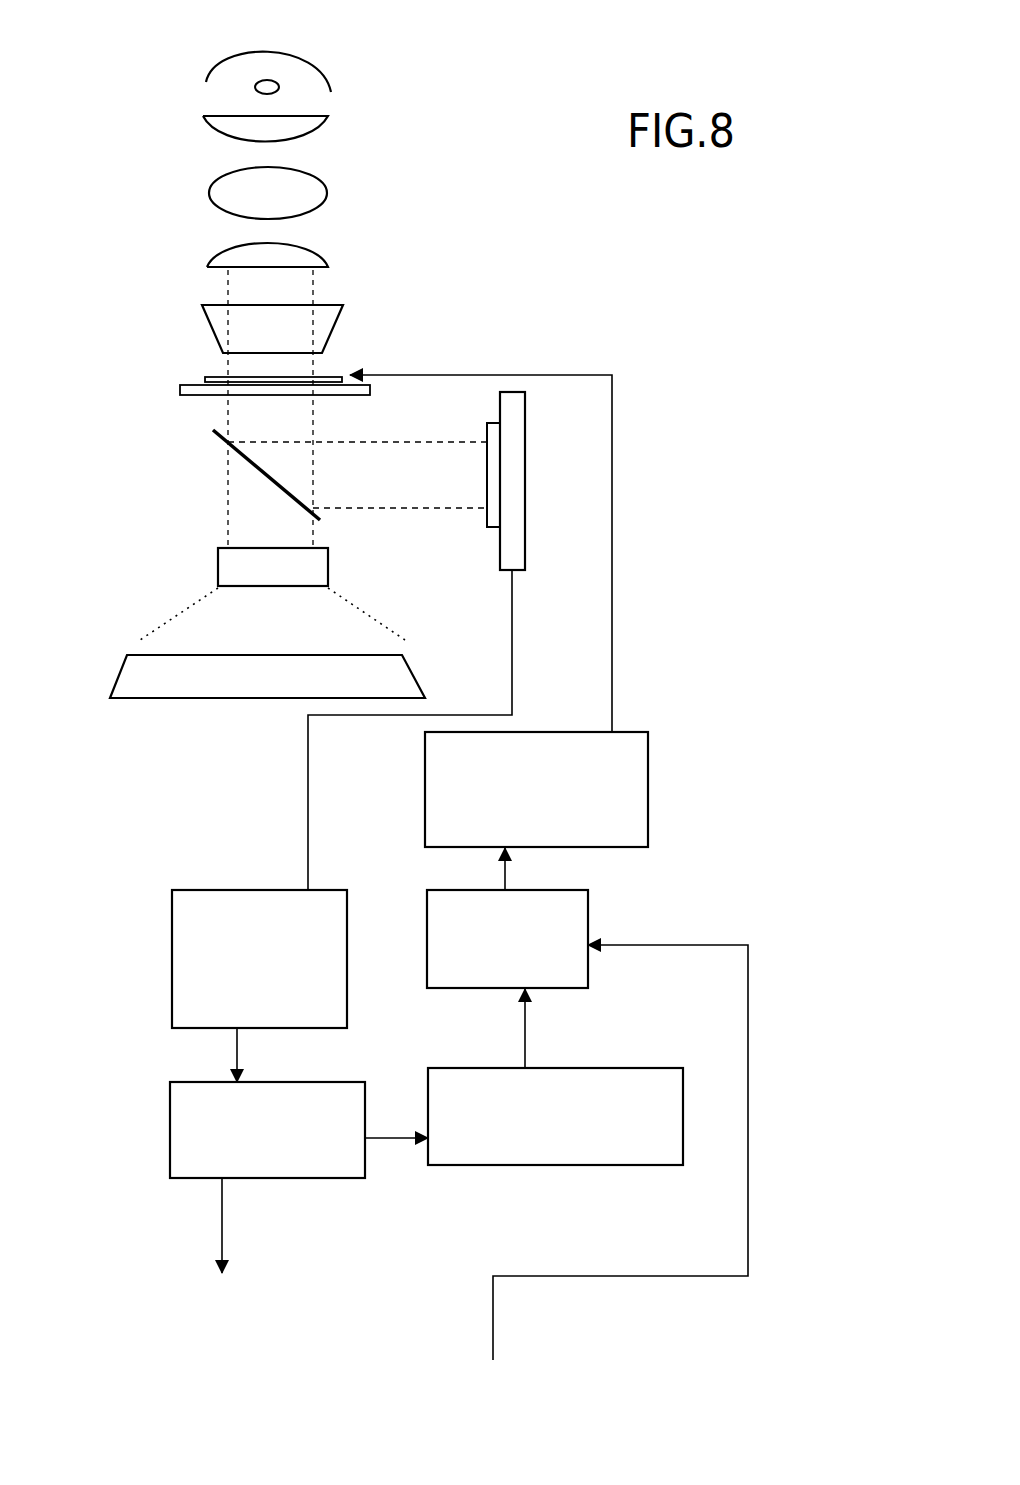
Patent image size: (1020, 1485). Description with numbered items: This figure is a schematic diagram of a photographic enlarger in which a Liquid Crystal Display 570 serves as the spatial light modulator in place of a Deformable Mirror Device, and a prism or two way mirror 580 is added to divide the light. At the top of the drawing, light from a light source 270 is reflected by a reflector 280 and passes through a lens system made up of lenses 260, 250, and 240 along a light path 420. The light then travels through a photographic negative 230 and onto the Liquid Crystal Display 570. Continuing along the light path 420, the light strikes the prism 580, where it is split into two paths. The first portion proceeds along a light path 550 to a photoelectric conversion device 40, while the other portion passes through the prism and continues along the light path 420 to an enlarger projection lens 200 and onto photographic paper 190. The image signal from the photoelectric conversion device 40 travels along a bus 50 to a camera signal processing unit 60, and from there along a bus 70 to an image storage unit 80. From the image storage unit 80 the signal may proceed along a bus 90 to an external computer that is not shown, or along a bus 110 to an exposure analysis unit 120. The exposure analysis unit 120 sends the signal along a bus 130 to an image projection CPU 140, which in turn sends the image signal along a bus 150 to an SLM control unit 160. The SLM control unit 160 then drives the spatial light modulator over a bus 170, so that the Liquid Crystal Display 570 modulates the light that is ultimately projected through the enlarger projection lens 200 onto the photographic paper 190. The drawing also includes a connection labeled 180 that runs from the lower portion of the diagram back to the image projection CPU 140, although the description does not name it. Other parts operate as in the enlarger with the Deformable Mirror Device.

The photoelectric conversion device 40 is at (525, 428).
The bus 50 is at (308, 745).
The camera signal processing unit 60 is at (255, 890).
The bus 70 is at (237, 1053).
The image storage unit 80 is at (170, 1150).
The bus 90 is at (222, 1225).
The bus 110 is at (388, 1140).
The exposure analysis unit 120 is at (545, 1165).
The bus 130 is at (525, 1022).
The image projection CPU 140 is at (427, 928).
The bus 150 is at (505, 872).
The SLM control unit 160 is at (648, 790).
The bus 170 is at (640, 628).
The feedback signal line 180 is at (748, 945).
The photographic paper 190 is at (416, 683).
The enlarger projection lens 200 is at (218, 568).
The photographic negative 230 is at (336, 328).
The lens 240 is at (322, 255).
The lens 250 is at (325, 182).
The lens 260 is at (322, 122).
The light source 270 is at (279, 84).
The reflector 280 is at (312, 62).
The light path 420 is at (226, 290).
The light path 550 is at (430, 509).
The Liquid Crystal Display 570 is at (190, 378).
The prism or two way mirror 580 is at (213, 430).